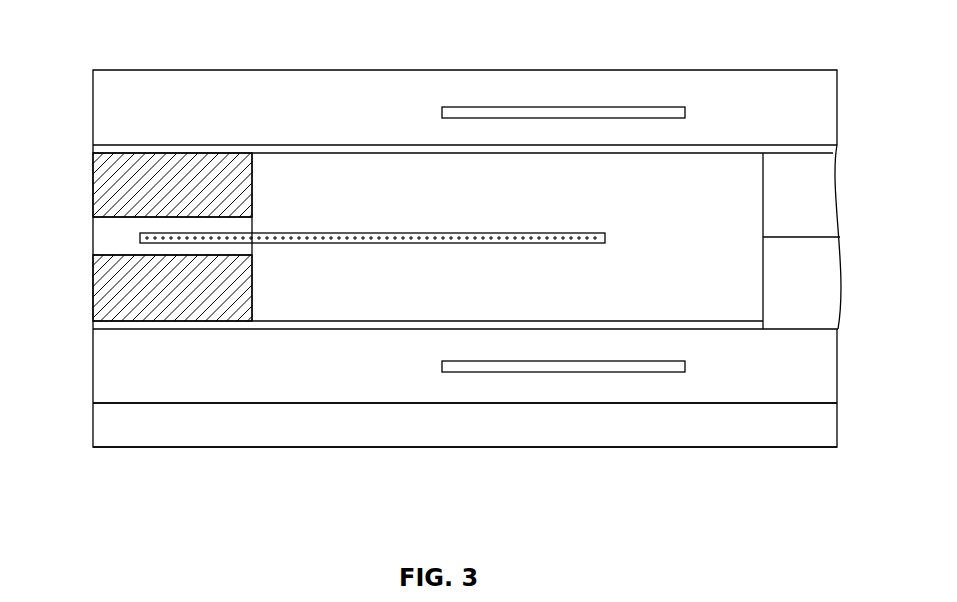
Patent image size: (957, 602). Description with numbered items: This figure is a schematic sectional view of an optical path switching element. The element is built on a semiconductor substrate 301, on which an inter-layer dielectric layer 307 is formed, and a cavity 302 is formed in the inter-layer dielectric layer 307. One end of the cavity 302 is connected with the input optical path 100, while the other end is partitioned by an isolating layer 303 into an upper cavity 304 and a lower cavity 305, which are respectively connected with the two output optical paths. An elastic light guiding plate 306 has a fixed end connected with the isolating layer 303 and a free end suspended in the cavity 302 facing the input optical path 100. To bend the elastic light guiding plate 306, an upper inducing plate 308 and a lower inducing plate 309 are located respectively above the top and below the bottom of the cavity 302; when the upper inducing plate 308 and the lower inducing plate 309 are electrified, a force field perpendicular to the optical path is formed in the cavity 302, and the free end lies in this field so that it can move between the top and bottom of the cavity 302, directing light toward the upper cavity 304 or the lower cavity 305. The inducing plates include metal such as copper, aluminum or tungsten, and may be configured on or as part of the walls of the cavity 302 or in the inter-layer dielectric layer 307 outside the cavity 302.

The input optical path 100 is at (813, 212).
The semiconductor substrate 301 is at (820, 440).
The cavity 302 is at (722, 312).
The isolating layer 303 is at (107, 243).
The upper cavity 304 is at (107, 197).
The lower cavity 305 is at (107, 296).
The elastic light guiding plate 306 is at (363, 233).
The inter-layer dielectric layer 307 is at (820, 392).
The upper inducing plate 308 is at (551, 107).
The lower inducing plate 309 is at (551, 372).